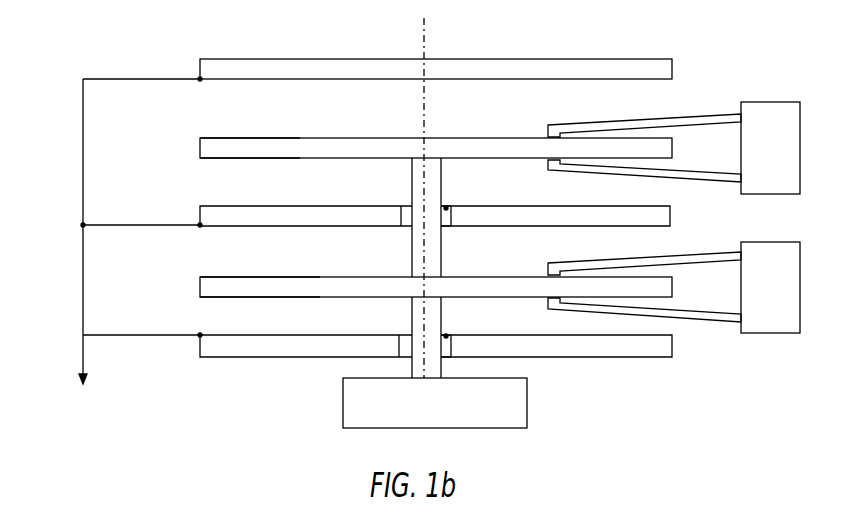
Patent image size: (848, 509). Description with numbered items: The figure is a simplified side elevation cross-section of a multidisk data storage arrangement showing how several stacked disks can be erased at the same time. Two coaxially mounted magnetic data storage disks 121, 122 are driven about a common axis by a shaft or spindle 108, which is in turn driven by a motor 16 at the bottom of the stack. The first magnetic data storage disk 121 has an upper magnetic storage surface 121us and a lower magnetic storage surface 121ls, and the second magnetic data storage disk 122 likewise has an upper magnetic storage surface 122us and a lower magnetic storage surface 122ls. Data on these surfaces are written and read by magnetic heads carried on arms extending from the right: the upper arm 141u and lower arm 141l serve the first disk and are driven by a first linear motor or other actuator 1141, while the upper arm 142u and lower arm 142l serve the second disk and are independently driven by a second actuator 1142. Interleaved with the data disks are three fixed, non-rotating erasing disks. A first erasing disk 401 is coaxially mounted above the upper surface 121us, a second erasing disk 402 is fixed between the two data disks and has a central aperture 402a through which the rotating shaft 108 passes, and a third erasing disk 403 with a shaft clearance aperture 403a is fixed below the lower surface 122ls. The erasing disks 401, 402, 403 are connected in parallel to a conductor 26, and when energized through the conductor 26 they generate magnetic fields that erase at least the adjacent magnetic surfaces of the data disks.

The conductor 26 is at (83, 270).
The first erasing disk 401 is at (200, 79).
The second erasing disk 402 is at (200, 214).
The central aperture 402a is at (446, 208).
The third erasing disk 403 is at (200, 337).
The shaft clearance aperture 403a is at (446, 336).
The first magnetic data storage disk 121 is at (200, 147).
The upper magnetic storage surface of first disk 121us is at (213, 138).
The lower magnetic storage surface of first disk 121ls is at (218, 158).
The second magnetic data storage disk 122 is at (200, 288).
The upper magnetic storage surface of second disk 122us is at (263, 277).
The lower magnetic storage surface of second disk 122ls is at (260, 313).
The shaft 108 is at (412, 245).
The motor 16 is at (343, 405).
The upper arm of first arm set 141u is at (713, 113).
The lower arm of first arm set 141l is at (710, 173).
The first actuator 1141 is at (775, 102).
The upper arm of second arm set 142u is at (706, 252).
The lower arm of second arm set 142l is at (696, 321).
The second actuator 1142 is at (765, 242).